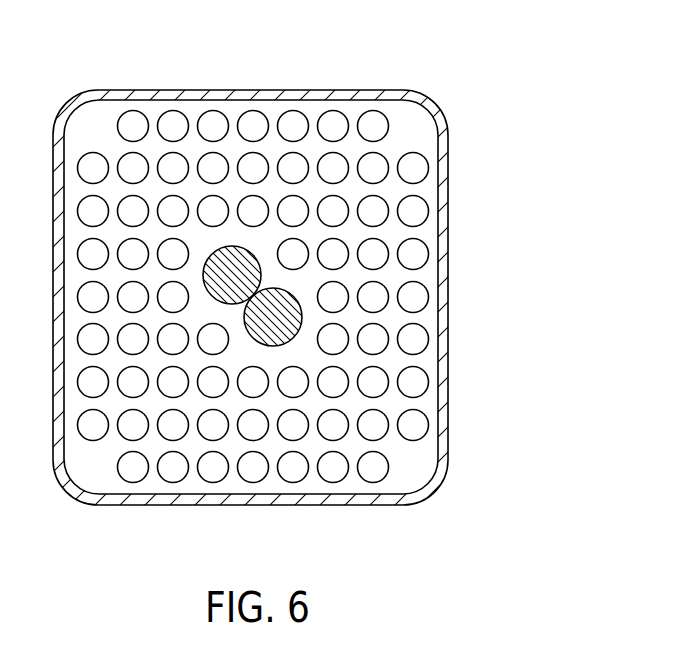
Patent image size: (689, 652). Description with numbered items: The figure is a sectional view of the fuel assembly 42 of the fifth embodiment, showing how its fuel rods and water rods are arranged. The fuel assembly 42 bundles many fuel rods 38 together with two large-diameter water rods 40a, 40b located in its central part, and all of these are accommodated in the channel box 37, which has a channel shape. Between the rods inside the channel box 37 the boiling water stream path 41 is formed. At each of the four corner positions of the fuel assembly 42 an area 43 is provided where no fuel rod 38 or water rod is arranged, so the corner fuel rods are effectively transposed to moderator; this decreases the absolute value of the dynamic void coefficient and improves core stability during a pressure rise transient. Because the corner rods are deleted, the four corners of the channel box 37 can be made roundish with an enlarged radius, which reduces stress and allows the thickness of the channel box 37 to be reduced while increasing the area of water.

The channel box 37 is at (109, 90).
The fuel rod 38 is at (428, 211).
The water rod 40a is at (233, 246).
The water rod 40b is at (274, 346).
The boiling water stream path 41 is at (427, 277).
The fuel assembly 42 is at (344, 294).
The area where a fuel rod or water rod is not arranged 43 is at (425, 125).